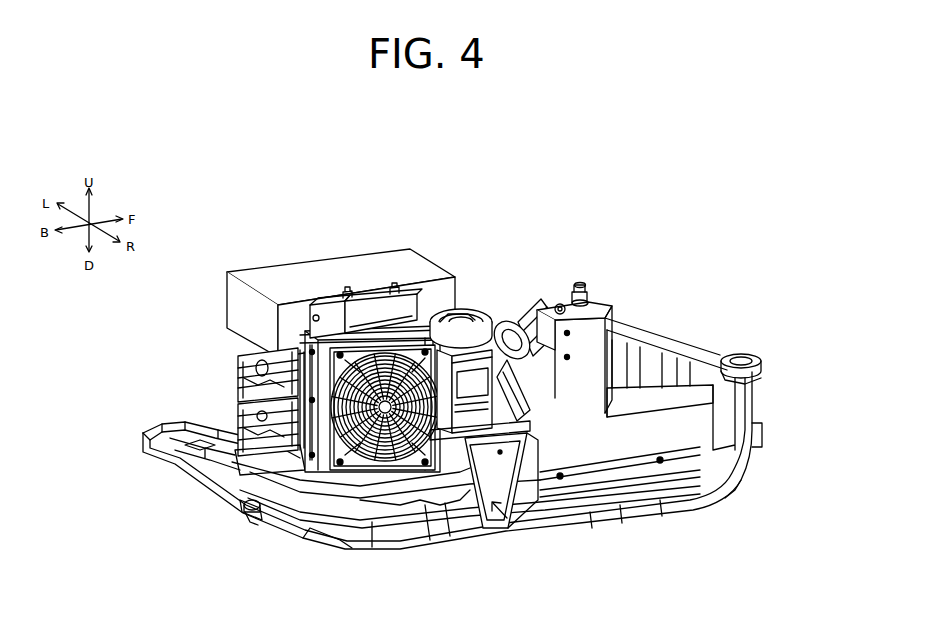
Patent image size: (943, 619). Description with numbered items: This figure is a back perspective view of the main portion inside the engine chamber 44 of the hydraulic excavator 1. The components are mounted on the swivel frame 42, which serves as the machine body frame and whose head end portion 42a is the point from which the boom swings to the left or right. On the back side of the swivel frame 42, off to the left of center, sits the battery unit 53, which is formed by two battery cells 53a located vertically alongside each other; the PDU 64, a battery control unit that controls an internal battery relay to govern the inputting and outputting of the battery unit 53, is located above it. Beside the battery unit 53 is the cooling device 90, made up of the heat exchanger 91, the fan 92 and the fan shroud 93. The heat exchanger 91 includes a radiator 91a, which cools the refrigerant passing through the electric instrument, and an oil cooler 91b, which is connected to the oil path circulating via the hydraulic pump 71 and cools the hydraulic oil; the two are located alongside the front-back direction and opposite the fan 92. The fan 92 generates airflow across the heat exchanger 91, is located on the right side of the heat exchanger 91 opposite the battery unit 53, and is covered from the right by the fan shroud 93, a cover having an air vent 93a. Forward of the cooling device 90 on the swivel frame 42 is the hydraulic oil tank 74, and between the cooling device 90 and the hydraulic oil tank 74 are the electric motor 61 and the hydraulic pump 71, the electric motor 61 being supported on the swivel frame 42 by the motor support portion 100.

The hydraulic excavator 1 is at (760, 226).
The engine chamber 44 is at (112, 306).
The swivel frame 42 is at (596, 524).
The head end portion 42a is at (745, 352).
The battery unit 53 is at (222, 400).
The battery cell 53a is at (246, 358).
The electric motor 61 is at (482, 312).
The PDU 64 is at (292, 272).
The hydraulic pump 71 is at (444, 513).
The hydraulic oil tank 74 is at (598, 342).
The cooling device 90 is at (250, 515).
The heat exchanger 91 is at (366, 269).
The radiator 91a is at (330, 318).
The oil cooler 91b is at (375, 313).
The fan 92 is at (430, 330).
The fan shroud 93 is at (372, 465).
The air vent 93a is at (354, 540).
The motor support portion 100 is at (509, 540).